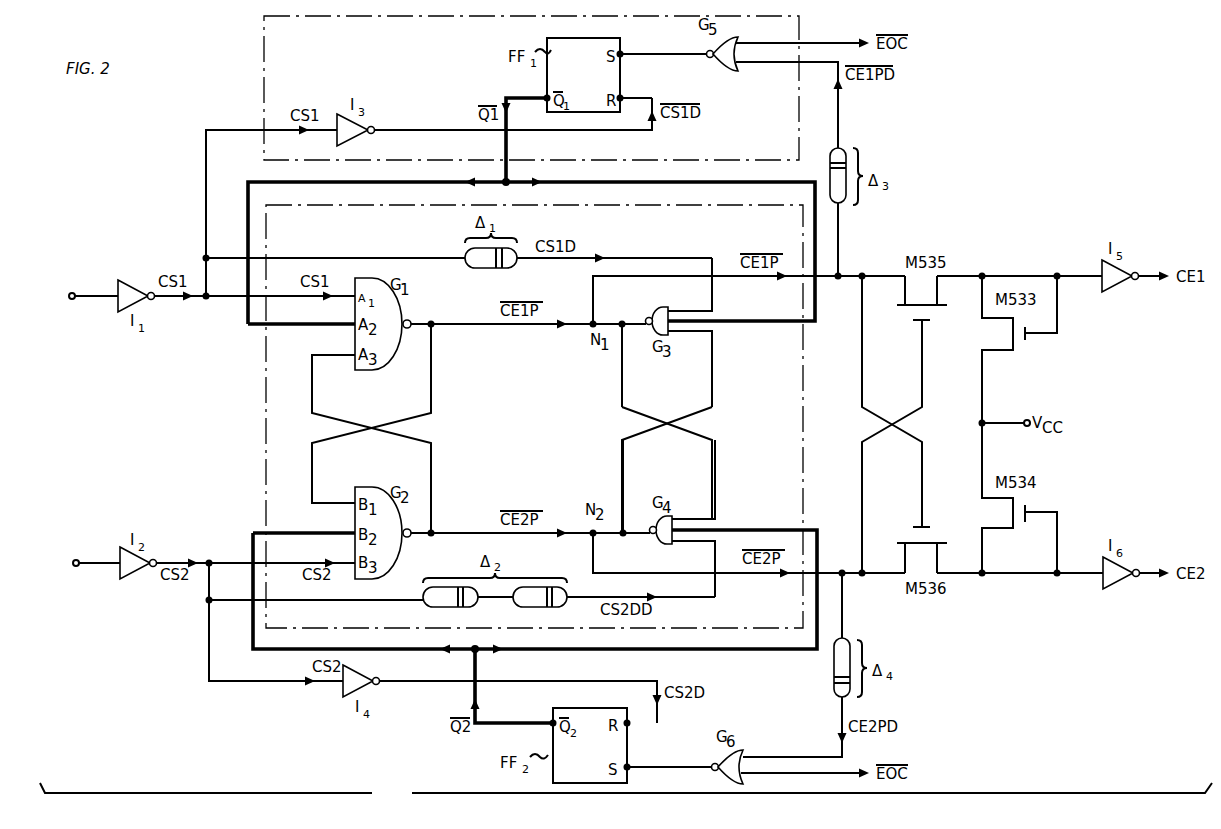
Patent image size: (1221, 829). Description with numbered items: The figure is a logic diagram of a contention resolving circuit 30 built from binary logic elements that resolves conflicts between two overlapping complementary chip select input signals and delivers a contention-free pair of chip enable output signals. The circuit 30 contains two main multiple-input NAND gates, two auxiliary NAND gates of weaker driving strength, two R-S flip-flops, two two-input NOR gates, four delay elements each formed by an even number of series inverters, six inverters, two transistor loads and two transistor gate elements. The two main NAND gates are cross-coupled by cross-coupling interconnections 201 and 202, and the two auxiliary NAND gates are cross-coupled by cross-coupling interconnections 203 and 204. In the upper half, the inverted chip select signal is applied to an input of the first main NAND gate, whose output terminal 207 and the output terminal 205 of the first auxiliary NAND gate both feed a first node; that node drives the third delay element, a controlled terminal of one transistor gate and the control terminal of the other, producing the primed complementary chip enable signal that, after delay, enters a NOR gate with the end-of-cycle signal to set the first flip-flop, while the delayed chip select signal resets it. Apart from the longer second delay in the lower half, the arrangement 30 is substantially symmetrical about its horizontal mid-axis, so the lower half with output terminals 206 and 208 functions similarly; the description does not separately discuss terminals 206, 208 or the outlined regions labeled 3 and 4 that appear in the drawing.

The chip enable logic block 3 is at (274, 389).
The flip-flop control block 4 is at (264, 48).
The contention resolving circuit 30 is at (626, 793).
The cross-coupling interconnection 201 is at (431, 373).
The cross-coupling interconnection 202 is at (431, 485).
The cross-coupling interconnection 203 is at (714, 368).
The cross-coupling interconnection 204 is at (716, 483).
The output terminal of NAND gate G3 205 is at (625, 318).
The node N2 junction 206 is at (626, 536).
The output terminal of NAND gate G1 207 is at (502, 315).
The G2 output node 208 is at (502, 545).